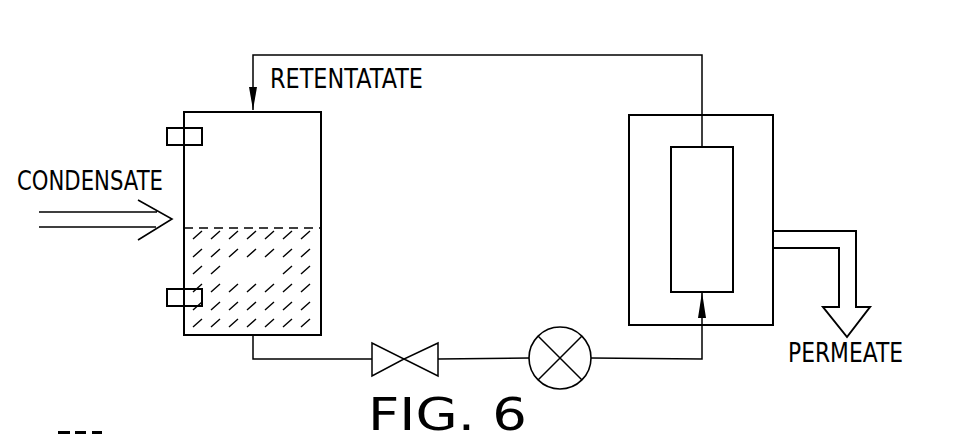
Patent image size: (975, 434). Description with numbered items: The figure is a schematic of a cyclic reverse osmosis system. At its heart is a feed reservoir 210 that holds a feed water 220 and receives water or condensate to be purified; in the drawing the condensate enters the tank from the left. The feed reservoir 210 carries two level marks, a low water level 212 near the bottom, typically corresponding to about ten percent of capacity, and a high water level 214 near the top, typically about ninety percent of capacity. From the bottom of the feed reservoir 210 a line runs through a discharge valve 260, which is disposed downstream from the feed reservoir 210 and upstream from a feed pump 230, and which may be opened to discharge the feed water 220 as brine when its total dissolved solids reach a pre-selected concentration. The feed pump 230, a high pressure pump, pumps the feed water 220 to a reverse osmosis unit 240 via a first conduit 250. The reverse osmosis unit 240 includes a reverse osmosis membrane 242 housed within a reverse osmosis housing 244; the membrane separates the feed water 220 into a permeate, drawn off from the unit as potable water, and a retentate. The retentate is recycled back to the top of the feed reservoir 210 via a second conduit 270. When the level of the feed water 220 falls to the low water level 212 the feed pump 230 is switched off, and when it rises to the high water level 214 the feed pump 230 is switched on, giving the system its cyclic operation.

The feed reservoir 210 is at (322, 170).
The low water level 212 is at (175, 288).
The high water level 214 is at (175, 127).
The feed water 220 is at (277, 280).
The feed pump 230 is at (558, 327).
The reverse osmosis unit 240 is at (757, 83).
The reverse osmosis membrane 242 is at (726, 223).
The reverse osmosis housing 244 is at (629, 172).
The first conduit 250 is at (650, 360).
The discharge valve 260 is at (430, 342).
The second conduit 270 is at (488, 55).